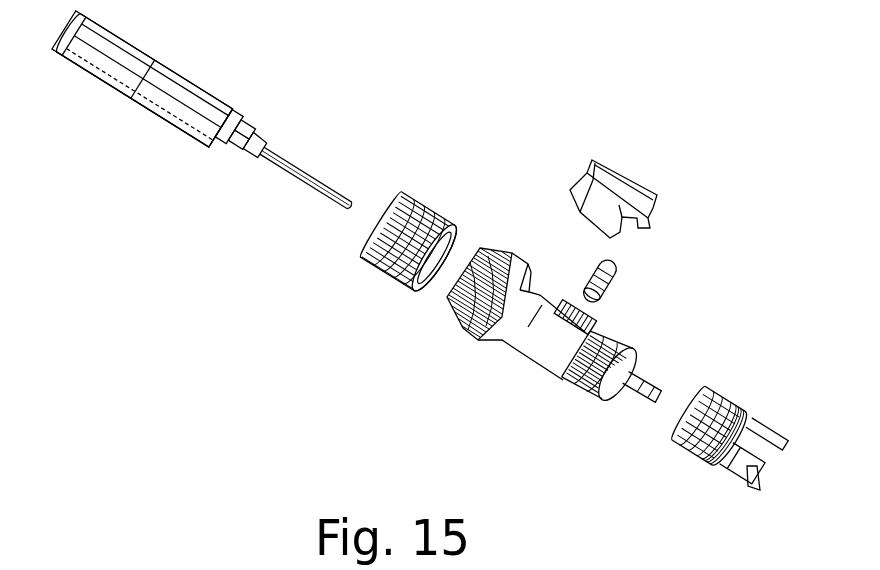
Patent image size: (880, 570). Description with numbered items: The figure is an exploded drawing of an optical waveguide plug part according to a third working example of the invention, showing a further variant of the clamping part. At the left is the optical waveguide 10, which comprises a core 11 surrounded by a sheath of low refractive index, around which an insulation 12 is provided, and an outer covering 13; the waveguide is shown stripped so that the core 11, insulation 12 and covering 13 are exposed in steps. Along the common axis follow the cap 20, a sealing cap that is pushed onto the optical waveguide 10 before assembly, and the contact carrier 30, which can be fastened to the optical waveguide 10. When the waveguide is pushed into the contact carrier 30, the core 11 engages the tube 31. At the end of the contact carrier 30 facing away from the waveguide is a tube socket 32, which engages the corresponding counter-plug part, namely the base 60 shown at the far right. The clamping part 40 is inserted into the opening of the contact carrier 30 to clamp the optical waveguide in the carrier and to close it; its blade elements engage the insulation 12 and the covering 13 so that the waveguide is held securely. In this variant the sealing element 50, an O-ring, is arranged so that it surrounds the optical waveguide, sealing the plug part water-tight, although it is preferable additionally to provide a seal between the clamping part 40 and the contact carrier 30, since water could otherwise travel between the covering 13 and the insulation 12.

The optical waveguide 10 is at (253, 91).
The core 11 is at (297, 173).
The insulation 12 is at (240, 150).
The covering 13 is at (130, 90).
The cap 20 is at (440, 223).
The contact carrier 30 is at (579, 383).
The tube 31 is at (657, 378).
The tube socket 32 is at (610, 412).
The clamping part 40 is at (640, 193).
The sealing element 50 is at (617, 277).
The base 60 is at (720, 397).